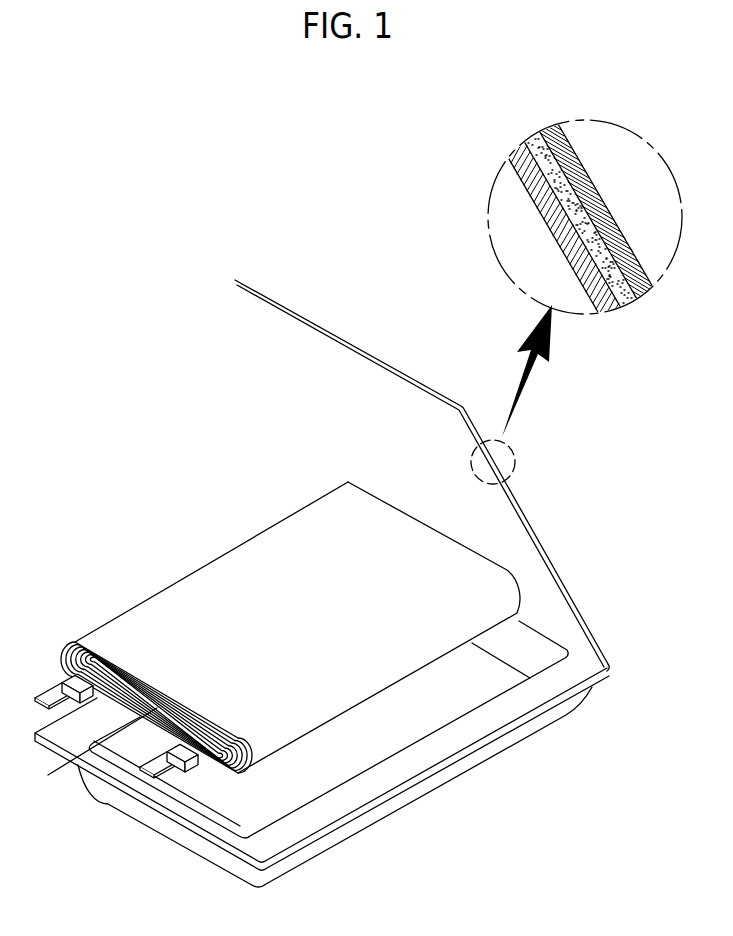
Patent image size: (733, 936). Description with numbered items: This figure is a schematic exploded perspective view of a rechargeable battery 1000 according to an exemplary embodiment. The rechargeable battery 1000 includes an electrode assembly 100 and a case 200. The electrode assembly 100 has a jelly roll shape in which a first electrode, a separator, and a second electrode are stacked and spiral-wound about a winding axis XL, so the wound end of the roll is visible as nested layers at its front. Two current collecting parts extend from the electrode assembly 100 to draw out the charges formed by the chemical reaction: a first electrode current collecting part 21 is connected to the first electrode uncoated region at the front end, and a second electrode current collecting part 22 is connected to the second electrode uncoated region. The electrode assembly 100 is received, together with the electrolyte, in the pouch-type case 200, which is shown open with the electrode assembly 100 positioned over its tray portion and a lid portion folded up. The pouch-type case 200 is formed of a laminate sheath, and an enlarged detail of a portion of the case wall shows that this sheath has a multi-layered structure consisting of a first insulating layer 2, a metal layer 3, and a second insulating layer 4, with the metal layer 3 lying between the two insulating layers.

The rechargeable battery 1000 is at (310, 222).
The electrode assembly 100 is at (183, 552).
The case 200 is at (308, 775).
The first electrode current collecting part 21 is at (148, 774).
The second electrode current collecting part 22 is at (50, 697).
The winding axis XL is at (88, 749).
The first insulating layer 2 is at (518, 147).
The metal layer 3 is at (537, 138).
The second insulating layer 4 is at (547, 128).